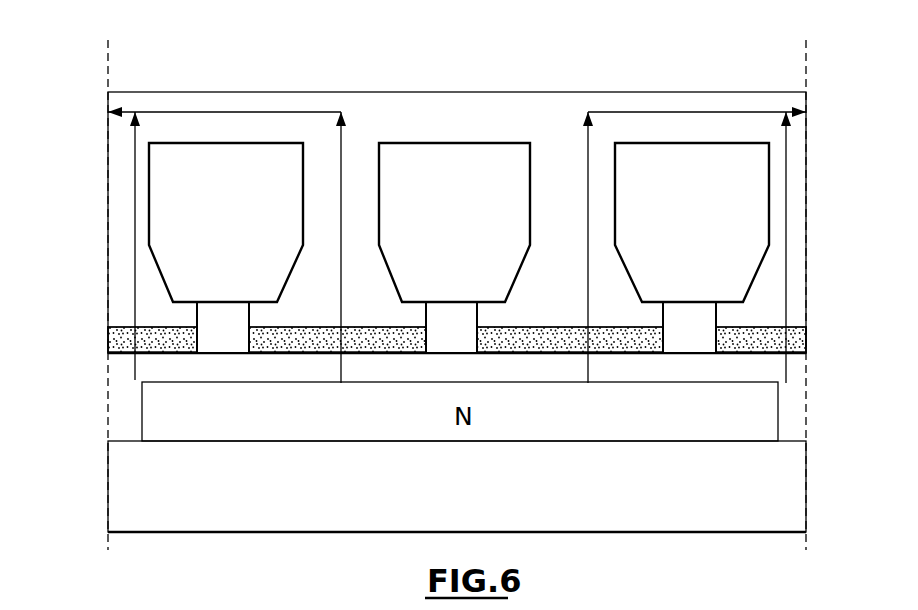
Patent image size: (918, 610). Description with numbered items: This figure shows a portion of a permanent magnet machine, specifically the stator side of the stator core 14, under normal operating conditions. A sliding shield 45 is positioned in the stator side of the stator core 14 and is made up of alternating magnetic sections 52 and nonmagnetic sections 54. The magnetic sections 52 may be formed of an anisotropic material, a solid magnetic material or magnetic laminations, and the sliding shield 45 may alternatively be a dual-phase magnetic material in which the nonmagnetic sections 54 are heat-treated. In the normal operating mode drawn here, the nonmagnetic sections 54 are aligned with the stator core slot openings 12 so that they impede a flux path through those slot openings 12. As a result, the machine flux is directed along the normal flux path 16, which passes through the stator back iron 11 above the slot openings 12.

The stator back iron 11 is at (457, 192).
The stator core slot openings 12 is at (692, 222).
The stator core 14 is at (194, 245).
The normal flux path 16 is at (572, 221).
The sliding shield 45 is at (457, 315).
The magnetic sections 52 is at (395, 347).
The nonmagnetic sections 54 is at (221, 337).